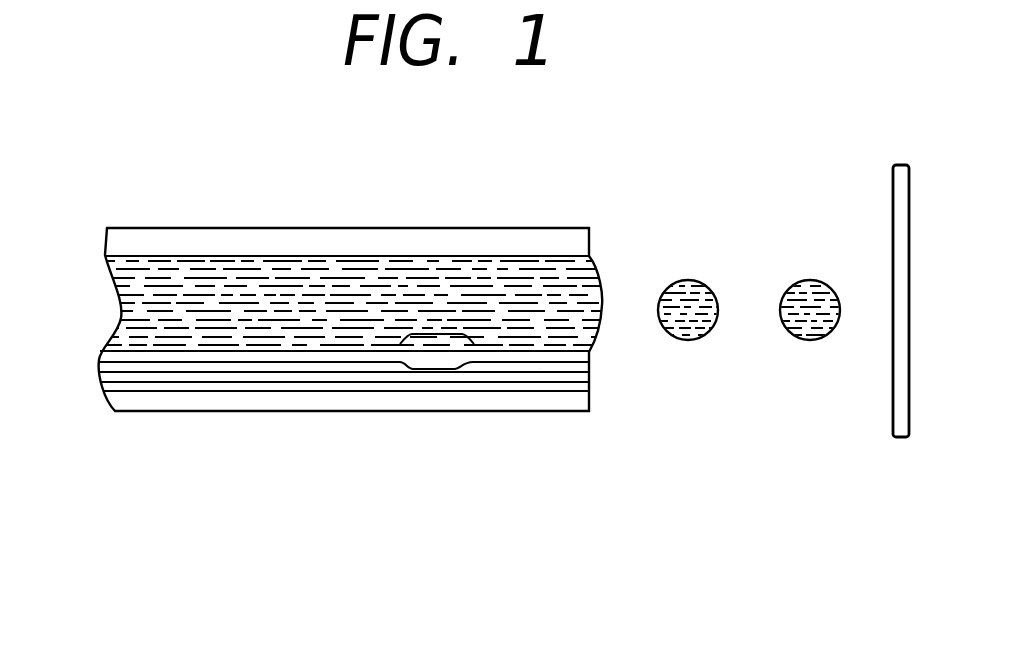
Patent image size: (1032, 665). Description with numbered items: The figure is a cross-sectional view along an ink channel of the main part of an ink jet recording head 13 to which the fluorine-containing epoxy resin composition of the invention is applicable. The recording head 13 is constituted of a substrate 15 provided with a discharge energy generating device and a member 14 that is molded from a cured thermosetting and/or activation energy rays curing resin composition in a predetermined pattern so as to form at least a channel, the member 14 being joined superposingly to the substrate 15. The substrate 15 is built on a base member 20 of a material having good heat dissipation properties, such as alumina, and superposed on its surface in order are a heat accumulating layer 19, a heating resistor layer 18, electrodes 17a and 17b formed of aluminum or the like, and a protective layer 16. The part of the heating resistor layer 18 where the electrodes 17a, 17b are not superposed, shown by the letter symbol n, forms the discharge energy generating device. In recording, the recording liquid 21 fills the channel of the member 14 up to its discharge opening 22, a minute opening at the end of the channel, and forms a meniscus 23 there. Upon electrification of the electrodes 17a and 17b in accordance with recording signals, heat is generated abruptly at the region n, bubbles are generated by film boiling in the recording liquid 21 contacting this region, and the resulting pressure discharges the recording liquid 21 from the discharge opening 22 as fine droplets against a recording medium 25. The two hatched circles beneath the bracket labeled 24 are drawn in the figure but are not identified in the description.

The recording head 13 is at (208, 208).
The member 14 is at (268, 242).
The recording liquid 21 is at (148, 268).
The region where electrodes are not superposed n is at (437, 330).
The substrate 15 is at (92, 348).
The protective layer 16 is at (148, 356).
The electrode 17a is at (207, 368).
The electrode 17b is at (540, 368).
The heating resistor layer 18 is at (260, 377).
The heat accumulating layer 19 is at (323, 396).
The base member 20 is at (402, 402).
The discharge opening 22 is at (607, 340).
The meniscus 23 is at (600, 287).
The cords 24 is at (647, 268).
The recording medium 25 is at (893, 212).